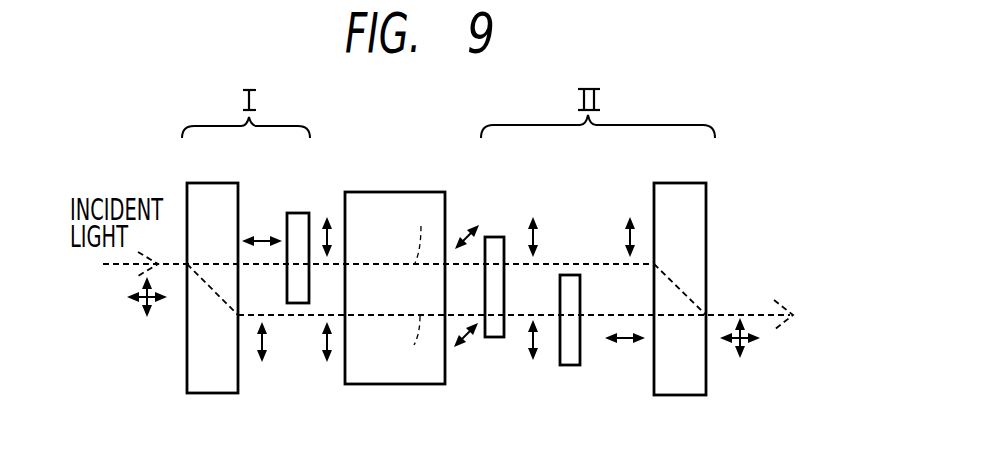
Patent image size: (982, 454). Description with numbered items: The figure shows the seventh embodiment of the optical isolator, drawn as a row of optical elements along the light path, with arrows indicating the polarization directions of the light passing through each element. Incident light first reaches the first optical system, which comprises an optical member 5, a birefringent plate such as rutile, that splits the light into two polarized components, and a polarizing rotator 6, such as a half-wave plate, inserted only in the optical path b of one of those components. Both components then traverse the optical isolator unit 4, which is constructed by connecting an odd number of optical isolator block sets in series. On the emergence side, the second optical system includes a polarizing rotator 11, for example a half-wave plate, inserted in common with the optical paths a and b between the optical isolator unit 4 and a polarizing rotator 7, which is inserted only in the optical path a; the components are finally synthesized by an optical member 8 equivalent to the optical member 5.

The optical isolator unit 4 is at (362, 203).
The optical member 5 is at (199, 197).
The polarizing rotator 6 is at (299, 222).
The polarizing rotator 7 is at (571, 285).
The optical member 8 is at (693, 193).
The polarizing rotator 11 is at (492, 245).